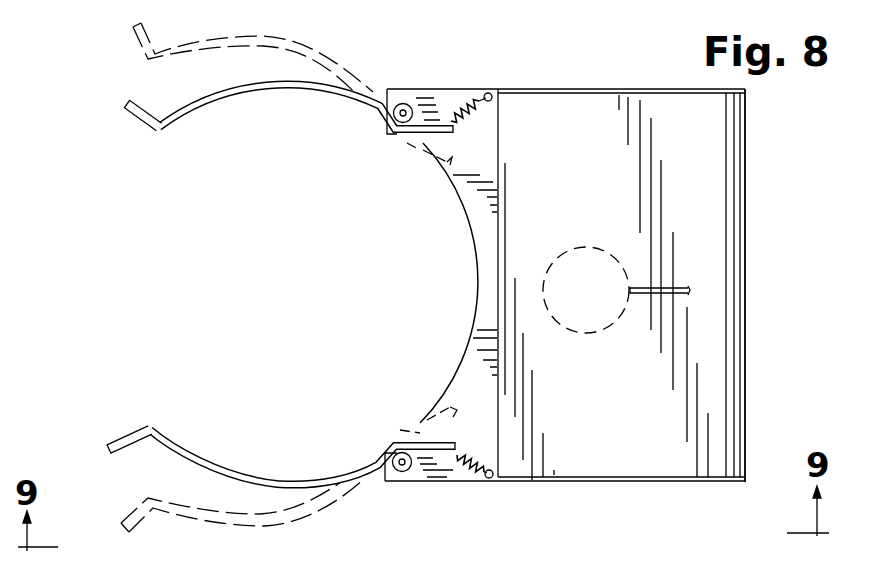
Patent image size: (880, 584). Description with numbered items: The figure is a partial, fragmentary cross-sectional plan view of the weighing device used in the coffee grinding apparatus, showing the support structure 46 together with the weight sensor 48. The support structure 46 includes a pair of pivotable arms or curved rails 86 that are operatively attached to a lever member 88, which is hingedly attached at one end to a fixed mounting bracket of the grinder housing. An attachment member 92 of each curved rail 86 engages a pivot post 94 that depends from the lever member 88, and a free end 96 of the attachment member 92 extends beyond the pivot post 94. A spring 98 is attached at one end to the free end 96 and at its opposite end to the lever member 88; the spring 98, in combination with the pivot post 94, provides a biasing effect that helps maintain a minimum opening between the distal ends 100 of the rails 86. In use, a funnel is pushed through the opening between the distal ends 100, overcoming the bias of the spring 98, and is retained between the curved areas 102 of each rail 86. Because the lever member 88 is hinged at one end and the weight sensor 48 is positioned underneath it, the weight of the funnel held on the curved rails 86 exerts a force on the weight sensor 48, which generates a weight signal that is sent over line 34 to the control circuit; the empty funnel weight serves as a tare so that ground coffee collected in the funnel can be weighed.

The line 34 is at (690, 299).
The support structure 46 is at (99, 80).
The weight sensor 48 is at (607, 328).
The curved rails 86 is at (173, 103).
The lever member 88 is at (558, 107).
The attachment member 92 is at (403, 104).
The pivot post 94 is at (407, 110).
The free end 96 is at (460, 131).
The spring 98 is at (455, 112).
The distal ends 100 is at (157, 128).
The curved areas 102 is at (287, 92).